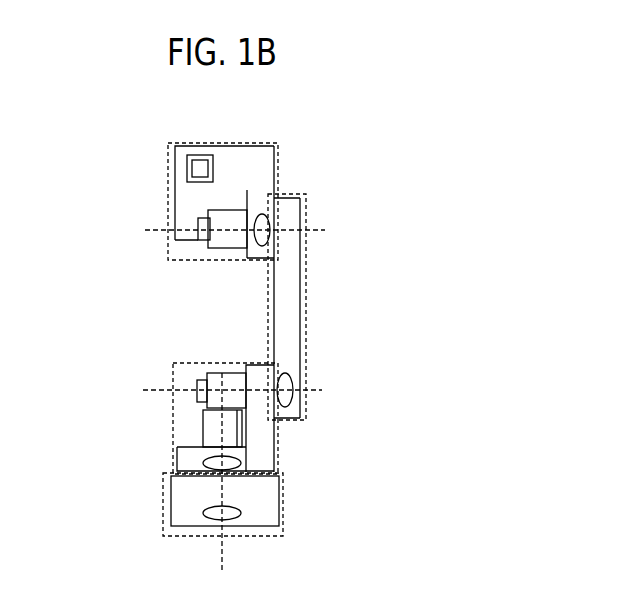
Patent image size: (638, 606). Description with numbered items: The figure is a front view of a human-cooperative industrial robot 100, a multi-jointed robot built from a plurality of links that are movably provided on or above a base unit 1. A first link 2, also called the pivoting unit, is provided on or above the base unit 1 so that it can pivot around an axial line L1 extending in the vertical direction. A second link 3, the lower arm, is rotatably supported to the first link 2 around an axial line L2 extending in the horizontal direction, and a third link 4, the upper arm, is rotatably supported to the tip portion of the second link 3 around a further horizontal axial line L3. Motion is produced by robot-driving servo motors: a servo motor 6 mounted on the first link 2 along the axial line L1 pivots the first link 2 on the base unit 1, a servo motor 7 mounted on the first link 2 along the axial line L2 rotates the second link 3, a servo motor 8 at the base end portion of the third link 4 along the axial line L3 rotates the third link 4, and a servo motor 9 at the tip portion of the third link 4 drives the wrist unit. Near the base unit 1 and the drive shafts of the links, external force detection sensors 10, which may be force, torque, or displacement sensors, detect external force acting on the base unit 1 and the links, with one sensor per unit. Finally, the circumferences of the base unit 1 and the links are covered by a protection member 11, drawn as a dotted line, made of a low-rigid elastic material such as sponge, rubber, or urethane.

The human-cooperative industrial robot 100 is at (390, 173).
The base unit 1 is at (262, 503).
The first link 2 is at (258, 445).
The second link 3 is at (300, 307).
The third link 4 is at (257, 168).
The servo motor 6 is at (213, 427).
The servo motor 7 is at (226, 373).
The servo motor 8 is at (225, 248).
The servo motor 9 is at (202, 155).
The external force detection sensor 10 is at (256, 262).
The protection member 11 is at (163, 170).
The axial line L1 is at (221, 487).
The axial line L2 is at (219, 390).
The axial line L3 is at (222, 232).